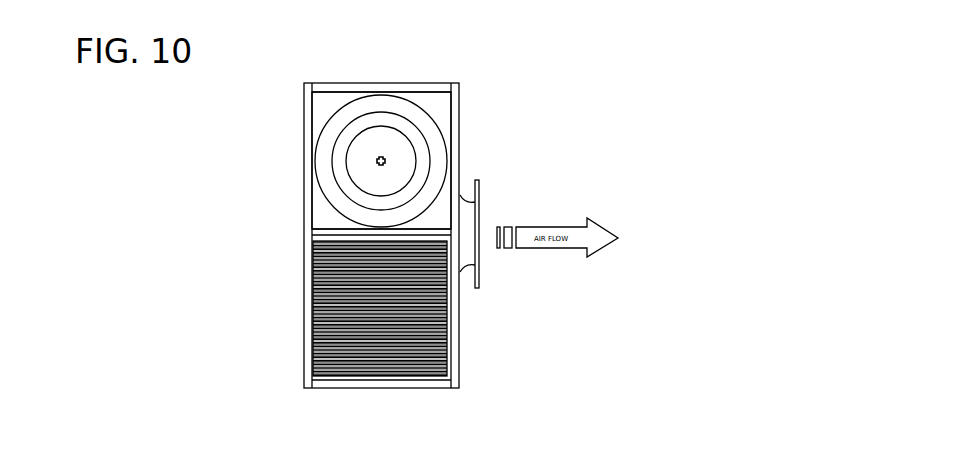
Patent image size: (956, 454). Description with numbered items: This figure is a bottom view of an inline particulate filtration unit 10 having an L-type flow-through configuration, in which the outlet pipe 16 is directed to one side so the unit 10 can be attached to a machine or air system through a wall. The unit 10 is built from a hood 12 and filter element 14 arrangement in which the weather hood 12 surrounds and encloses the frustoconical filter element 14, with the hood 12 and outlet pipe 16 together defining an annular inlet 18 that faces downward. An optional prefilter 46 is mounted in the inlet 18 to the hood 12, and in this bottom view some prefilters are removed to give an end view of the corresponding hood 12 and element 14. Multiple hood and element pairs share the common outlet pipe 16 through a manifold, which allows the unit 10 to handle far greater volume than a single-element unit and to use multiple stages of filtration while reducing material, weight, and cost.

The filtration unit 10 is at (538, 347).
The weather hood 12 is at (460, 108).
The filter element 14 is at (392, 120).
The outlet pipe 16 is at (468, 223).
The inlet 18 is at (320, 108).
The prefilter 46 is at (355, 302).